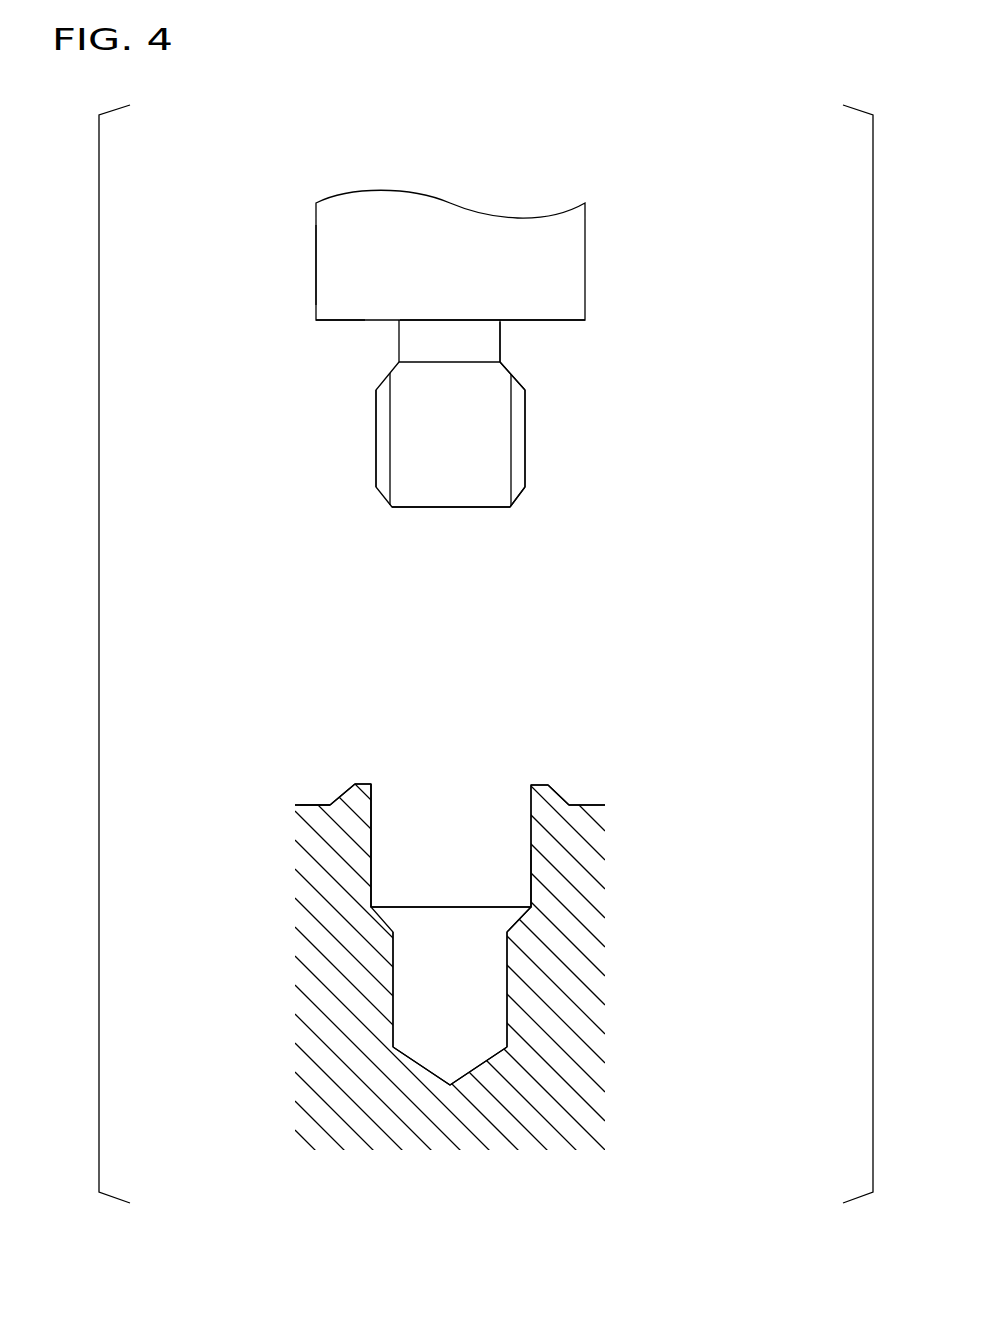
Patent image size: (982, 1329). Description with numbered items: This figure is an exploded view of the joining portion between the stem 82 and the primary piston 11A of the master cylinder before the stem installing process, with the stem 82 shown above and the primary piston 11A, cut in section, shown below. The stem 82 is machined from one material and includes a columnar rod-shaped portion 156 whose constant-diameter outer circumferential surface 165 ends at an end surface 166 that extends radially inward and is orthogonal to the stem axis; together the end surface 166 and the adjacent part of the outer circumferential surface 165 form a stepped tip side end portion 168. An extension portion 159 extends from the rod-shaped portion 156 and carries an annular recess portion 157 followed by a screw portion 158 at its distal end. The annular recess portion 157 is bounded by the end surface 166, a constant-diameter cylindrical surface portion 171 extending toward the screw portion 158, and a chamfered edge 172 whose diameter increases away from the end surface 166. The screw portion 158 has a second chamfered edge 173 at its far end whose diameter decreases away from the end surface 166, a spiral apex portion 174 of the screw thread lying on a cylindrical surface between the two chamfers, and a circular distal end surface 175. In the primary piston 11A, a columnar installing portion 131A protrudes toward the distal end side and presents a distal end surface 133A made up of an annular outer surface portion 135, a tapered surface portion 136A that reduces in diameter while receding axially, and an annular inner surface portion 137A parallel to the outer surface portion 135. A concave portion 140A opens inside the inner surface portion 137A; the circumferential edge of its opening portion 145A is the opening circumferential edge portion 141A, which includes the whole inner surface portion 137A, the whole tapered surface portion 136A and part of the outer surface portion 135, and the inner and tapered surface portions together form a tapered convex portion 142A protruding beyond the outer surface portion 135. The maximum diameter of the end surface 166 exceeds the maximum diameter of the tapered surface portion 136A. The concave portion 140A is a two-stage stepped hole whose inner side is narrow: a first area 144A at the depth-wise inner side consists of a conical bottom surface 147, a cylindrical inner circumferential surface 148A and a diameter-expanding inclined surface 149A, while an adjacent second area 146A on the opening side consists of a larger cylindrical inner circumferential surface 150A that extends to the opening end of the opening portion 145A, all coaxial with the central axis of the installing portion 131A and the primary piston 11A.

The stem 82 is at (618, 207).
The rod-shaped portion 156 is at (374, 210).
The outer circumferential surface 165 is at (316, 262).
The end surface 166 is at (557, 320).
The tip side end portion 168 is at (333, 320).
The annular recess portion 157 is at (399, 345).
The cylindrical surface portion 171 is at (502, 340).
The chamfered edge 172 is at (505, 366).
The spiral apex portion 174 is at (527, 437).
The chamfered edge 173 is at (517, 498).
The distal end surface 175 is at (452, 508).
The screw portion 158 is at (376, 445).
The extension portion 159 is at (375, 510).
The primary piston 11A is at (708, 804).
The installing portion 131A is at (573, 863).
The outer surface portion 135 is at (297, 805).
The tapered surface portion 136A is at (315, 803).
The inner surface portion 137A is at (343, 793).
The opening portion 145A is at (363, 783).
The concave portion 140A is at (530, 827).
The opening circumferential edge portion 141A is at (540, 785).
The convex portion 142A is at (553, 795).
The distal end surface 133A is at (570, 805).
The inner circumferential surface 150A is at (530, 893).
The inclined surface 149A is at (508, 943).
The inner circumferential surface 148A is at (509, 1002).
The bottom surface 147 is at (479, 1072).
The second area 146A is at (289, 783).
The first area 144A is at (289, 908).